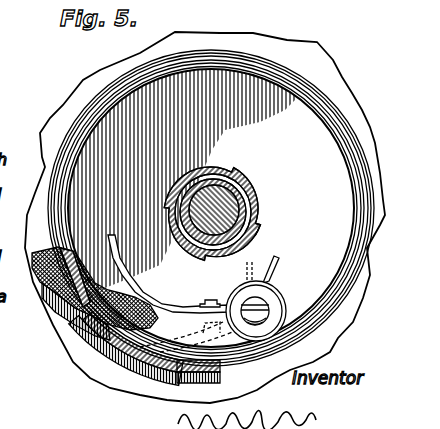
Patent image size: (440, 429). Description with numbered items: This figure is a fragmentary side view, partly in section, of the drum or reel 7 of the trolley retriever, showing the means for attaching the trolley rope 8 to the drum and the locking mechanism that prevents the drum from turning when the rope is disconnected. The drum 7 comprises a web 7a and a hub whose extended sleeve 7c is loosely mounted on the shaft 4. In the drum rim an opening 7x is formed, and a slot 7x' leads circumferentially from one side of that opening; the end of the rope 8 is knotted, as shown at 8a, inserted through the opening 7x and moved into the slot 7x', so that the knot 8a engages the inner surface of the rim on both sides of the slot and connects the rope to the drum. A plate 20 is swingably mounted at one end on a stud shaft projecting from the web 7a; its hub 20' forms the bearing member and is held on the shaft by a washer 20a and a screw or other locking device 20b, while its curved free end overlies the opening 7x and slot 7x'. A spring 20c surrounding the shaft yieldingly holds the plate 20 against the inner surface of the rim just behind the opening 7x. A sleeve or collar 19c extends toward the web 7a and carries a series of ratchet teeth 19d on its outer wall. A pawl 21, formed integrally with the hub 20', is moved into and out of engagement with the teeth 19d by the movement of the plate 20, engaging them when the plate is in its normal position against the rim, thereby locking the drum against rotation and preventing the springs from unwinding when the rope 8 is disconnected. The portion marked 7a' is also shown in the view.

The drum or reel 7 is at (100, 70).
The web 7a is at (187, 183).
The extended sleeve 7c is at (218, 183).
The shaft 4 is at (215, 205).
The sleeve or collar 19c is at (252, 197).
The ratchet teeth 19d is at (258, 210).
The plate 20 is at (169, 274).
The spring 20c is at (342, 267).
The hub 20' is at (264, 304).
The washer 20a is at (272, 308).
The screw or other locking device 20b is at (258, 318).
The pawl 21 is at (279, 260).
The trolley rope 8 is at (47, 303).
The knot 8a is at (155, 324).
The rim segment 7a' is at (188, 352).
The opening 7x is at (126, 365).
The slot 7x' is at (73, 341).